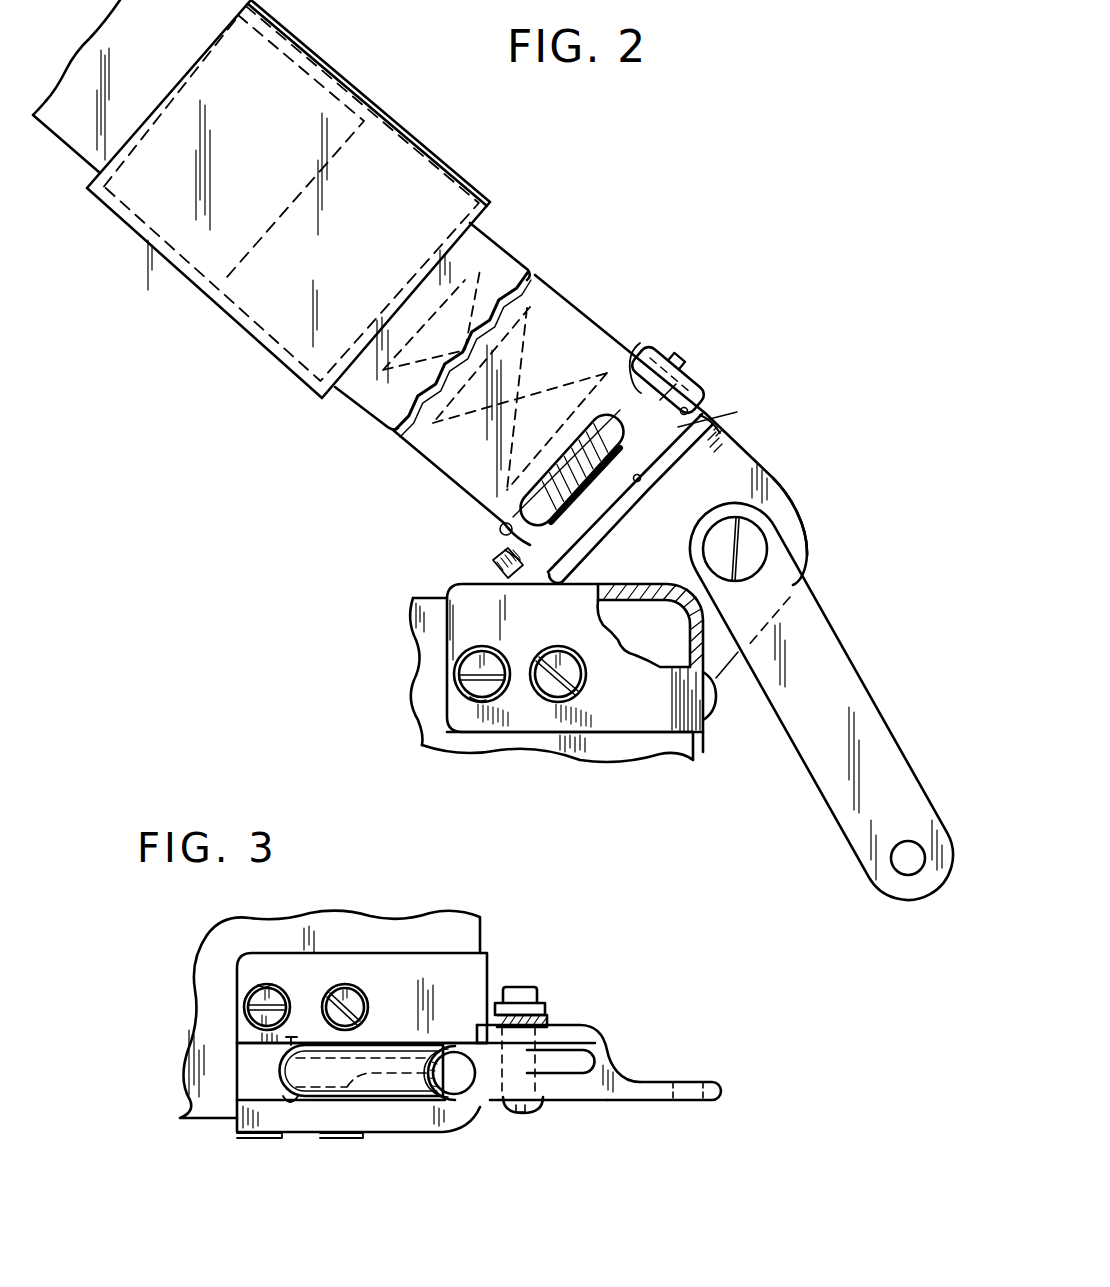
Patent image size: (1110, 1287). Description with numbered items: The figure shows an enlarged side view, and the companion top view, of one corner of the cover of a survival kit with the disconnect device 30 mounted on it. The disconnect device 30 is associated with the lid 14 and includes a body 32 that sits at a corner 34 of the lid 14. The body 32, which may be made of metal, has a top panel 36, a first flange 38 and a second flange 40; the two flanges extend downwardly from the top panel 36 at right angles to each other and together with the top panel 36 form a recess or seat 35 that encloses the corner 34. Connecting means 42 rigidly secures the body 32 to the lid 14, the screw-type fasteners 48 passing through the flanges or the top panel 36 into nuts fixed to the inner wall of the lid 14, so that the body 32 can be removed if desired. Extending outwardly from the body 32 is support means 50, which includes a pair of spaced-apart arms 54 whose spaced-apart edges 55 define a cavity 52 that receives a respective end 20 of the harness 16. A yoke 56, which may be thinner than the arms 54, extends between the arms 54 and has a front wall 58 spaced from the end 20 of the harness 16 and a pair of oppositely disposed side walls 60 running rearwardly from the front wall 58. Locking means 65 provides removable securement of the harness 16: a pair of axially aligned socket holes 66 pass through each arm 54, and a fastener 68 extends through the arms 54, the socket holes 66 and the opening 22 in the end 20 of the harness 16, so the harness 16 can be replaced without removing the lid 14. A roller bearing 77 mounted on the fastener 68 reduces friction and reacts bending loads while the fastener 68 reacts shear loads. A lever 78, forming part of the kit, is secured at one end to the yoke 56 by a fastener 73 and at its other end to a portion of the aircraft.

In FIG. 2, the lid 14 is at (415, 705).
In FIG. 3, the lid 14 is at (431, 921).
In FIG. 2, the harness 16 is at (503, 238).
In FIG. 2, the end 20 is at (737, 412).
In FIG. 2, the opening 22 is at (580, 552).
In FIG. 2, the disconnect device 30 is at (797, 472).
In FIG. 3, the disconnect device 30 is at (302, 1135).
In FIG. 2, the body 32 is at (707, 742).
In FIG. 2, the corner 34 is at (668, 600).
In FIG. 3, the corner 34 is at (490, 952).
In FIG. 2, the recess or seat 35 is at (677, 647).
In FIG. 2, the top panel 36 is at (638, 592).
In FIG. 3, the top panel 36 is at (360, 960).
In FIG. 2, the first flange 38 is at (617, 723).
In FIG. 2, the second flange 40 is at (712, 727).
In FIG. 2, the connecting means 42 is at (475, 699).
In FIG. 3, the connecting means 42 is at (262, 982).
In FIG. 2, the screw-type fasteners 48 is at (463, 665).
In FIG. 3, the screw-type fasteners 48 is at (250, 995).
In FIG. 2, the support means 50 is at (770, 455).
In FIG. 2, the cavity 52 is at (638, 342).
In FIG. 2, the arms 54 is at (695, 385).
In FIG. 2, the edges 55 is at (688, 409).
In FIG. 2, the yoke 56 is at (802, 521).
In FIG. 2, the front wall 58 is at (640, 480).
In FIG. 3, the front wall 58 is at (557, 1063).
In FIG. 3, the side walls 60 is at (557, 1042).
In FIG. 2, the locking means 65 is at (677, 350).
In FIG. 3, the locking means 65 is at (463, 1093).
In FIG. 2, the socket holes 66 is at (495, 570).
In FIG. 2, the fastener 68 is at (590, 488).
In FIG. 3, the fastener 68 is at (452, 1100).
In FIG. 2, the fastener 73 is at (755, 564).
In FIG. 3, the fastener 73 is at (522, 1113).
In FIG. 2, the roller bearing 77 is at (560, 465).
In FIG. 2, the lever 78 is at (873, 732).
In FIG. 3, the lever 78 is at (646, 1082).